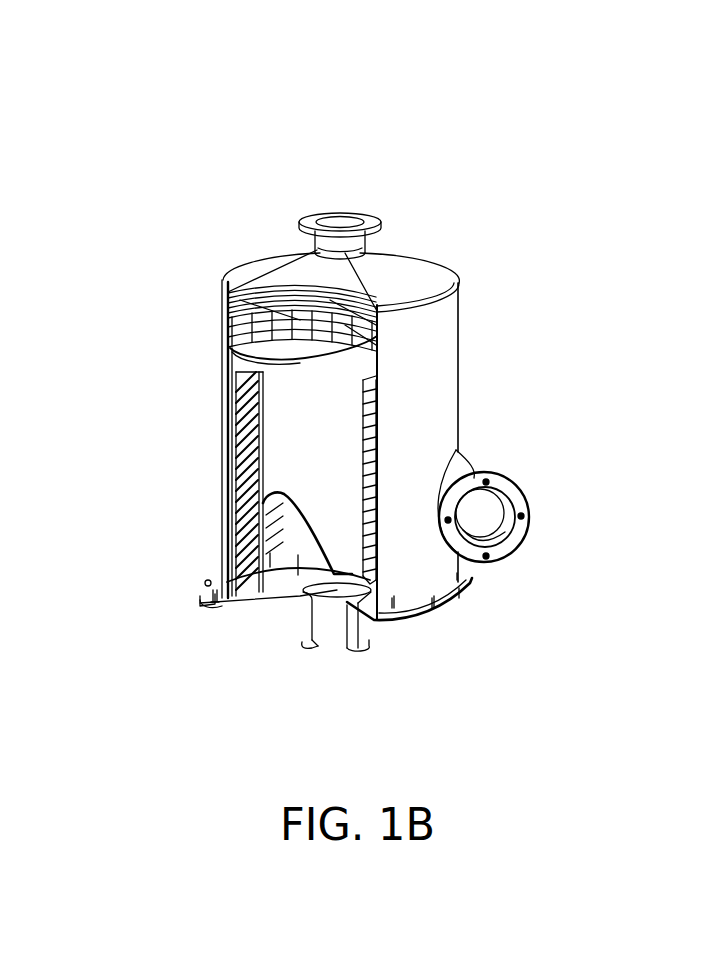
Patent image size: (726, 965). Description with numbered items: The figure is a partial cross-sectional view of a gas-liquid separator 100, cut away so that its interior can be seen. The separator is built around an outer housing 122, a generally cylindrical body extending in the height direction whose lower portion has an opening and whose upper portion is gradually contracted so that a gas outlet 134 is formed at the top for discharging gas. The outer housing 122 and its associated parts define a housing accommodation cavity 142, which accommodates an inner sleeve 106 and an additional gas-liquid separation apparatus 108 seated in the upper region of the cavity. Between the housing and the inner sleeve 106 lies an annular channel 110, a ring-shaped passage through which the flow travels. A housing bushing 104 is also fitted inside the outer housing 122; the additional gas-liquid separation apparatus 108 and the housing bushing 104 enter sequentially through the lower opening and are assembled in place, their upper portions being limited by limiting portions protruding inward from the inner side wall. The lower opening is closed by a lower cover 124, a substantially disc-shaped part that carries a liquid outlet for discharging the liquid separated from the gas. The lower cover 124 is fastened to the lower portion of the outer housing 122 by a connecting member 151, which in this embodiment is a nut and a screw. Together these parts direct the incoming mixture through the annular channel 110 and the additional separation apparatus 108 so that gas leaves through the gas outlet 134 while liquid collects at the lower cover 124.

The gas-liquid separator 100 is at (578, 74).
The housing bushing 104 is at (227, 450).
The inner sleeve 106 is at (238, 480).
The additional gas-liquid separation apparatus 108 is at (226, 285).
The annular channel 110 is at (234, 528).
The outer housing 122 is at (225, 366).
The lower cover 124 is at (285, 598).
The gas outlet 134 is at (343, 218).
The housing accommodation cavity 142 is at (272, 281).
The connecting member 151 is at (204, 584).